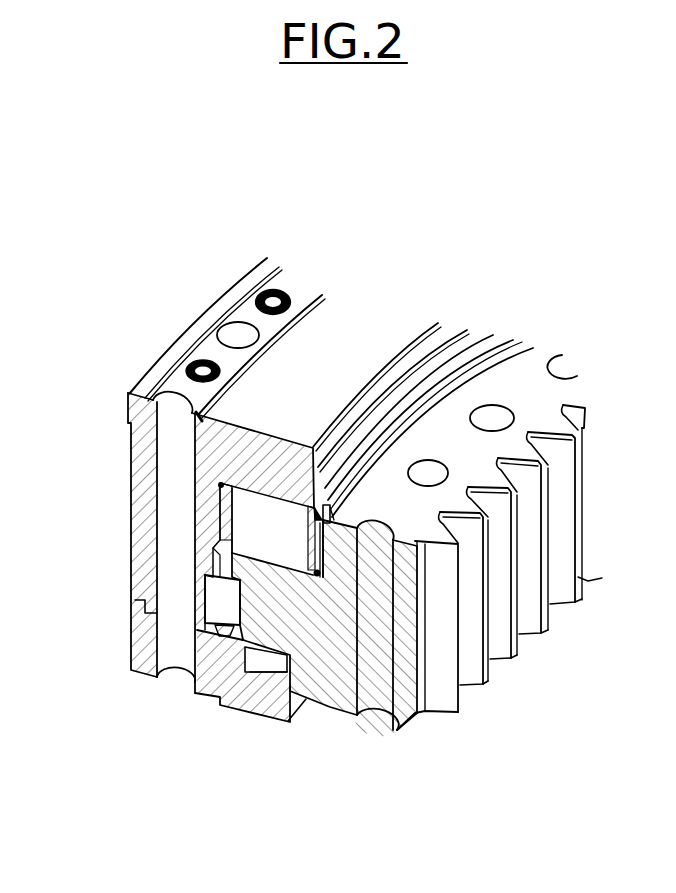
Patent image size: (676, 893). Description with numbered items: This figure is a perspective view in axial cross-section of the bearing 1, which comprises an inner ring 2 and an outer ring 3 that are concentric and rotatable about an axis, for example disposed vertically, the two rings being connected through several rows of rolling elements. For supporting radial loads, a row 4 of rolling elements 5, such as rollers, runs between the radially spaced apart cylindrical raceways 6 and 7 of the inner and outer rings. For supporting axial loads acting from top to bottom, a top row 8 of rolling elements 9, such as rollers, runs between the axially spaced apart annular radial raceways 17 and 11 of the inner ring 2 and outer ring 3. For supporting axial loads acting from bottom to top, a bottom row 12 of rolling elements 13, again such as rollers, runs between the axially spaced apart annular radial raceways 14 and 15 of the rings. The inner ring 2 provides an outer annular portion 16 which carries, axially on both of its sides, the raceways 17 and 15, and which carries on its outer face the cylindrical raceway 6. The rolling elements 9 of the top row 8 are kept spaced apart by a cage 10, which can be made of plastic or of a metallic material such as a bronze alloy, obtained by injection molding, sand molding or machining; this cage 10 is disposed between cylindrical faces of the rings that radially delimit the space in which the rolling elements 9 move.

The bearing 1 is at (205, 272).
The inner ring 2 is at (408, 734).
The outer ring 3 is at (143, 677).
The row of rolling elements 4 is at (224, 672).
The rolling elements 5 is at (233, 579).
The cylindrical raceway 6 is at (235, 637).
The cylindrical raceway 7 is at (222, 606).
The top row of rolling elements 8 is at (253, 502).
The rolling elements 9 is at (287, 513).
The cage 10 is at (221, 512).
The annular radial raceway 11 is at (220, 485).
The bottom row of rolling elements 12 is at (266, 673).
The rolling elements 13 is at (263, 628).
The annular radial raceway 14 is at (265, 672).
The annular radial raceway 15 is at (308, 700).
The outer annular portion 16 is at (277, 601).
The annular radial raceway 17 is at (222, 530).